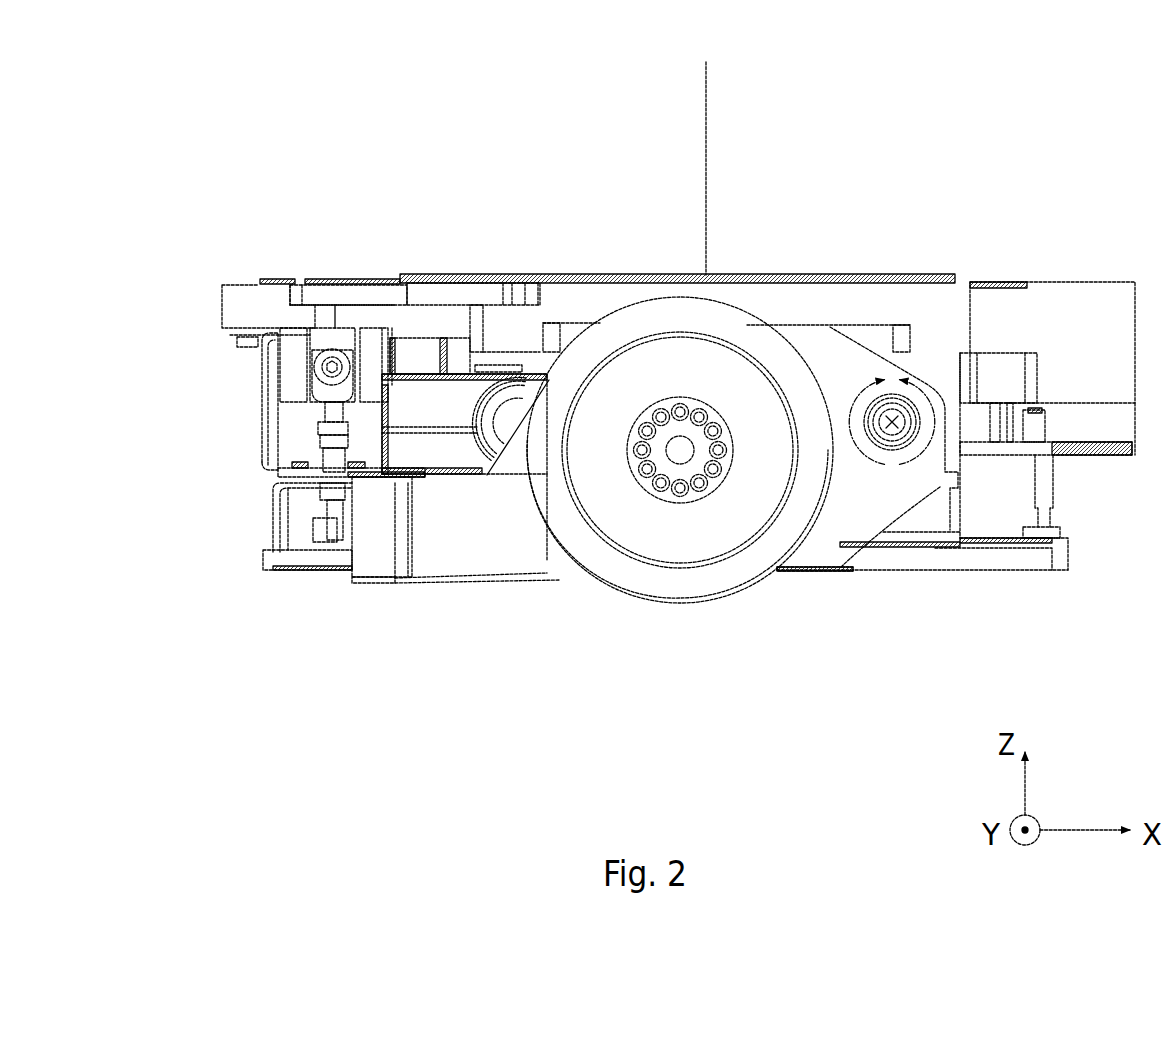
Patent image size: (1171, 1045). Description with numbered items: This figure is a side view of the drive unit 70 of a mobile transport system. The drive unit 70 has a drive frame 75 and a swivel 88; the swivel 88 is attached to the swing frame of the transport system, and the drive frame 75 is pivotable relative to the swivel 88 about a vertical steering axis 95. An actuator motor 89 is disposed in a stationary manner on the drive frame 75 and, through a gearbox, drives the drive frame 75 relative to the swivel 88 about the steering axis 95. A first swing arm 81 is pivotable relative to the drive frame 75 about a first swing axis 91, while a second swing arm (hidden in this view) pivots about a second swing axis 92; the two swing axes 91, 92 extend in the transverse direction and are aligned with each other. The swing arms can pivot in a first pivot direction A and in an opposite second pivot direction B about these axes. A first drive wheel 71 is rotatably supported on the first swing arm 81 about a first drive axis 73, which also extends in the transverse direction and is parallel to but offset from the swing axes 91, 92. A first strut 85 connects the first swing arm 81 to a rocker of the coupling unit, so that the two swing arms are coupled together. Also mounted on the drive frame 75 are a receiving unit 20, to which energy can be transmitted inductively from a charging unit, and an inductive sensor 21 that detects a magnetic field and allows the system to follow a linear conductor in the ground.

The receiving unit 20 is at (1062, 557).
The inductive sensor 21 is at (297, 576).
The drive unit 70 is at (292, 153).
The first drive wheel 71 is at (633, 575).
The first drive axis 73 is at (680, 450).
The drive frame 75 is at (588, 308).
The first swing arm 81 is at (465, 537).
The first strut 85 is at (335, 440).
The swivel 88 is at (546, 272).
The actuator motor 89 is at (433, 450).
The first swing axis 91 is at (892, 422).
The second swing axis 92 is at (922, 442).
The steering axis 95 is at (712, 121).
The first pivot direction A is at (857, 400).
The second pivot direction B is at (930, 393).